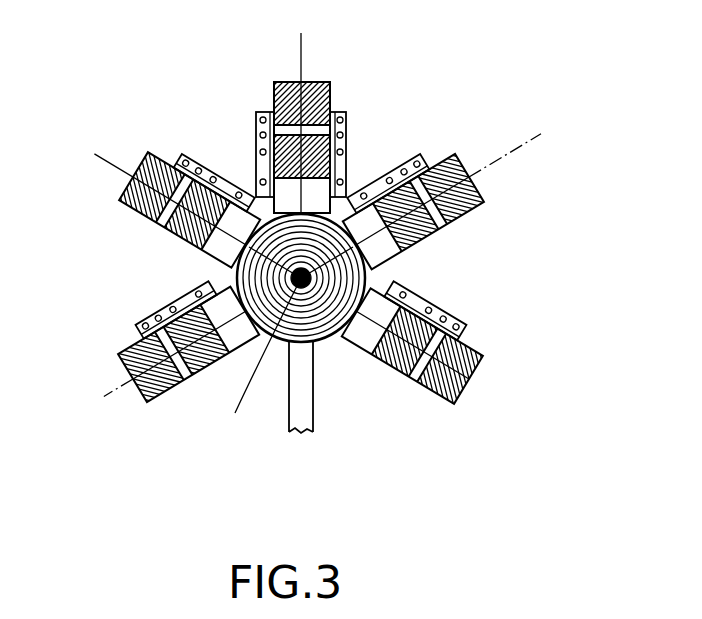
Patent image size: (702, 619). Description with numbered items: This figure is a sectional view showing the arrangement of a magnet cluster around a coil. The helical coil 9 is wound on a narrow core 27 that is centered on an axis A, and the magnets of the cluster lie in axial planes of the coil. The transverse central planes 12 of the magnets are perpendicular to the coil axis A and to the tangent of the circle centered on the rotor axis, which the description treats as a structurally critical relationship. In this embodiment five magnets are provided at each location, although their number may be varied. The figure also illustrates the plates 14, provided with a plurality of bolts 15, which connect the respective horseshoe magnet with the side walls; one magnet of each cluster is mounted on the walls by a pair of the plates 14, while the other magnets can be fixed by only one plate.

The transverse central plane 12 is at (316, 244).
The plate 14 is at (256, 130).
The bolt 15 is at (347, 150).
The helical coil 9 is at (350, 290).
The narrow core 27 is at (301, 278).
The coil axis A is at (235, 413).